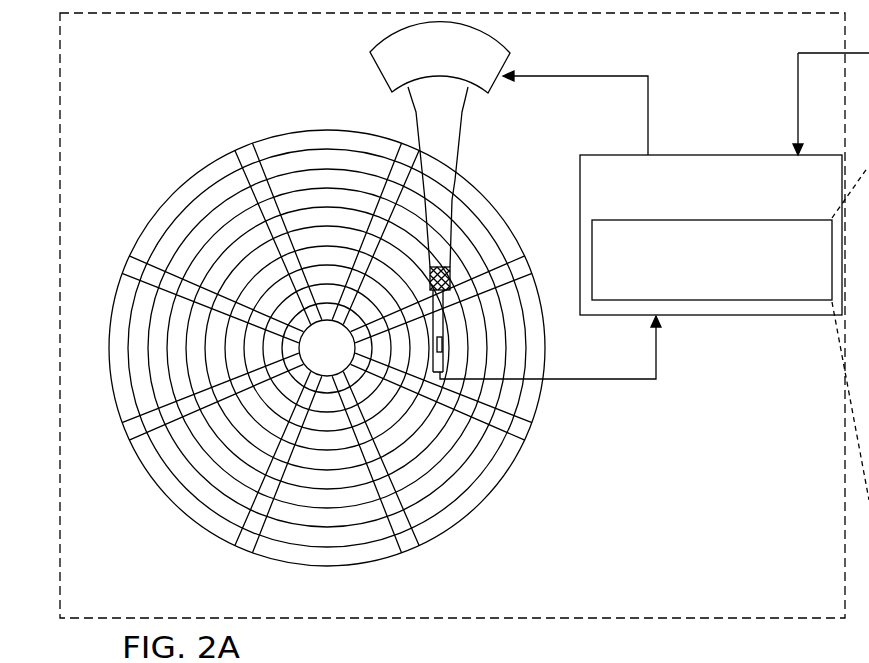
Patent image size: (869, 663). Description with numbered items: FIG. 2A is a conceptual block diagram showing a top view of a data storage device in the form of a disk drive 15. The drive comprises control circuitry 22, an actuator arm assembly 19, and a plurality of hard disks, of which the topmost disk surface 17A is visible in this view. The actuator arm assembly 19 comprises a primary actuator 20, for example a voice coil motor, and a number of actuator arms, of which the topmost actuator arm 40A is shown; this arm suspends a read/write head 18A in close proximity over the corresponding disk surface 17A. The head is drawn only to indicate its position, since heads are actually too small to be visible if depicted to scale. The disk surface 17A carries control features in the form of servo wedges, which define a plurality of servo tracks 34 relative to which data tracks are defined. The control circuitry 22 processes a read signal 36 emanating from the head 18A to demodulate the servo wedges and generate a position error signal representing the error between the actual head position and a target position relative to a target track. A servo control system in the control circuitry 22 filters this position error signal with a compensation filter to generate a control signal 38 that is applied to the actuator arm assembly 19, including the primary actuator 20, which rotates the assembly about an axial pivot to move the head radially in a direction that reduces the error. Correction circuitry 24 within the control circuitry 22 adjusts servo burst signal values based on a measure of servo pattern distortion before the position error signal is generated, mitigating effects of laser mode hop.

The disk drive 15 is at (774, 624).
The disk surface 17A is at (174, 177).
The read/write head 18A is at (450, 356).
The actuator arm assembly 19 is at (492, 118).
The primary actuator 20 is at (500, 87).
The control circuitry 22 is at (711, 235).
The correction circuitry 24 is at (730, 333).
The servo tracks 34 is at (332, 149).
The read signal 36 is at (635, 382).
The control signal 38 is at (649, 96).
The actuator arm 40A is at (459, 158).